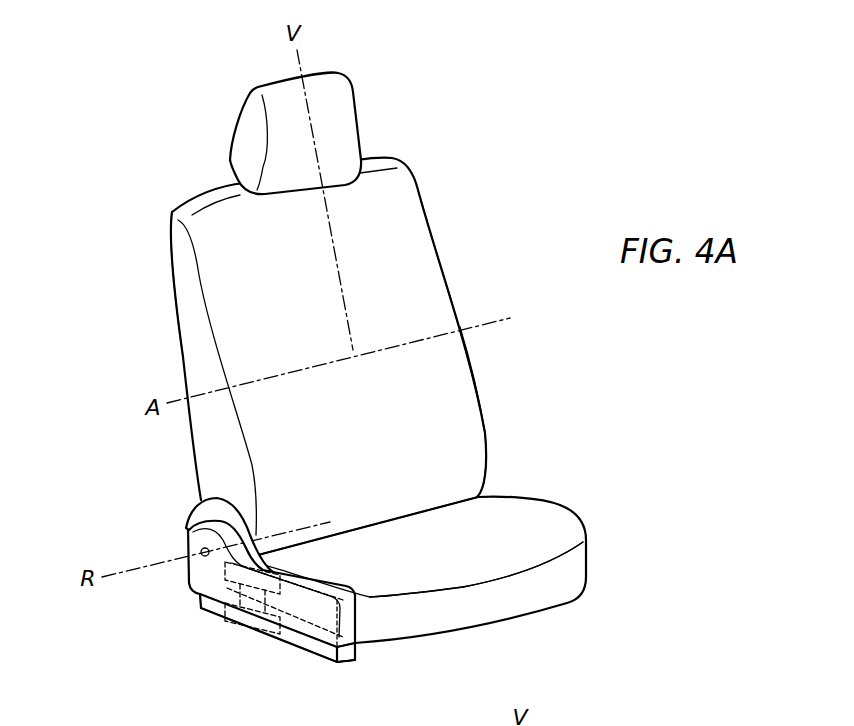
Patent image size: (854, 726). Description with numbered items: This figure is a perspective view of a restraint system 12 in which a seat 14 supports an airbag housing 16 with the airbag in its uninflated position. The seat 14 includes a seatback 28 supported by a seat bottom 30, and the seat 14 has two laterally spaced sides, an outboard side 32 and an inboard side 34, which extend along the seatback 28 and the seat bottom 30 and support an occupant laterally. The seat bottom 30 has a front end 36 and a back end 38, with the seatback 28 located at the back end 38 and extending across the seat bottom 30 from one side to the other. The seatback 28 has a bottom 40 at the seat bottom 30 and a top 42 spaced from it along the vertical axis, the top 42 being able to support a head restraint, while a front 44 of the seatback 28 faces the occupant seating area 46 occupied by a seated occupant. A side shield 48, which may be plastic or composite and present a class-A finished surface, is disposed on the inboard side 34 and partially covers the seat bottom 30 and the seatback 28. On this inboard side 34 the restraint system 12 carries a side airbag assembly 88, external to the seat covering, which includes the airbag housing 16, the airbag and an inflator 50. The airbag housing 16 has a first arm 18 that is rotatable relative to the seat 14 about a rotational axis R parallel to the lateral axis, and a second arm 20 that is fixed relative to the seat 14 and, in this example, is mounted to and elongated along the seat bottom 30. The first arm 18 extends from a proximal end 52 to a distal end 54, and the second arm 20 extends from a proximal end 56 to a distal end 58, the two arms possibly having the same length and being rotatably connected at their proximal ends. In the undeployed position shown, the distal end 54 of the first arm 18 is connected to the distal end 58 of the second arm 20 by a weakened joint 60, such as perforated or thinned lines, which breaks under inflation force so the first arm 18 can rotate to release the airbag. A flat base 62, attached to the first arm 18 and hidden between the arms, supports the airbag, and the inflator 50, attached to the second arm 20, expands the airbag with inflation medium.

The restraint system 12 is at (135, 130).
The seat 14 is at (483, 388).
The airbag housing 16 is at (285, 653).
The first arm 18 is at (185, 573).
The second arm 20 is at (318, 657).
The seatback 28 is at (168, 258).
The seat bottom 30 is at (572, 573).
The outboard side 32 is at (435, 242).
The inboard side 34 is at (198, 348).
The front end 36 is at (507, 598).
The back end 38 is at (412, 514).
The bottom 40 is at (385, 522).
The top 42 is at (378, 155).
The front 44 is at (383, 245).
The occupant seating area 46 is at (505, 440).
The side shield 48 is at (203, 512).
The inflator 50 is at (240, 627).
The proximal end 52 is at (210, 552).
The distal end 54 is at (352, 625).
The proximal end 56 is at (198, 602).
The distal end 58 is at (347, 657).
The weakened joint 60 is at (315, 640).
The base 62 is at (263, 563).
The side airbag assembly 88 is at (374, 596).